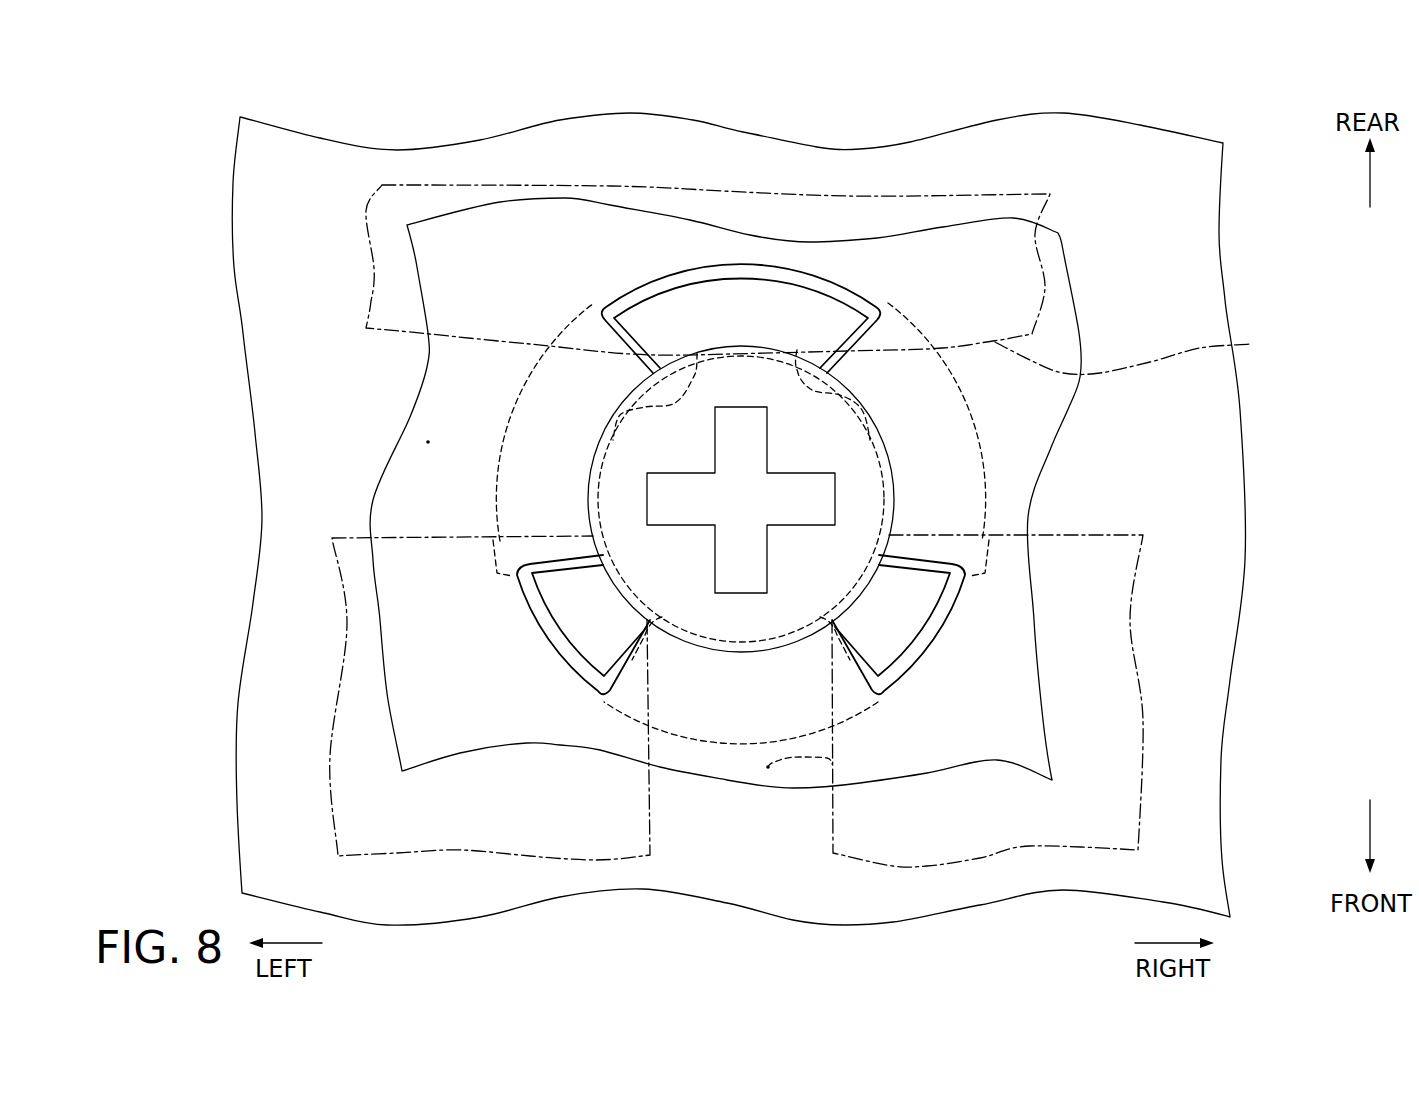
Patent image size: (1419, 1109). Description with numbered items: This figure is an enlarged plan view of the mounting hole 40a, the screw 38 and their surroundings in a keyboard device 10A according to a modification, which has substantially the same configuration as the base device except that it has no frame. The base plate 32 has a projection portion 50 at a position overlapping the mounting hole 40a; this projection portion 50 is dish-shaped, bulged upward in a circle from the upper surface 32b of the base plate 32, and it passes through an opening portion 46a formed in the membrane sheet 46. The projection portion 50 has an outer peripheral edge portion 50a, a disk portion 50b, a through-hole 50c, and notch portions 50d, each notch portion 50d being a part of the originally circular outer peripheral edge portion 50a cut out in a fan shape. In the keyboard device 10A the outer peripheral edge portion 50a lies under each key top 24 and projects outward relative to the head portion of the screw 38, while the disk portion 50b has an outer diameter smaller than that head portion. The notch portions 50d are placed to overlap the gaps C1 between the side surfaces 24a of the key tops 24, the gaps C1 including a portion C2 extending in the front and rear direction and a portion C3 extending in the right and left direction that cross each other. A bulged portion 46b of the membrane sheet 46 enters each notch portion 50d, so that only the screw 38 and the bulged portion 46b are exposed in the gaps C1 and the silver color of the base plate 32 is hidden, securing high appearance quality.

The keyboard device 10A is at (213, 97).
The key top 24 is at (942, 193).
The side surface 24a is at (1250, 344).
The base plate 32 is at (1203, 262).
The upper surface 32b is at (1190, 219).
The screw 38 is at (741, 695).
The mounting hole 40a is at (721, 625).
The membrane sheet 46 is at (1080, 406).
The opening portion 46a is at (653, 283).
The bulged portion 46b is at (697, 353).
The projection portion 50 is at (779, 268).
The outer peripheral edge portion 50a is at (742, 305).
The disk portion 50b is at (497, 499).
The through-hole 50c is at (670, 492).
The notch portion 50d is at (937, 558).
The gap C1 is at (427, 442).
The gap C2 is at (768, 767).
The gap C3 is at (272, 440).